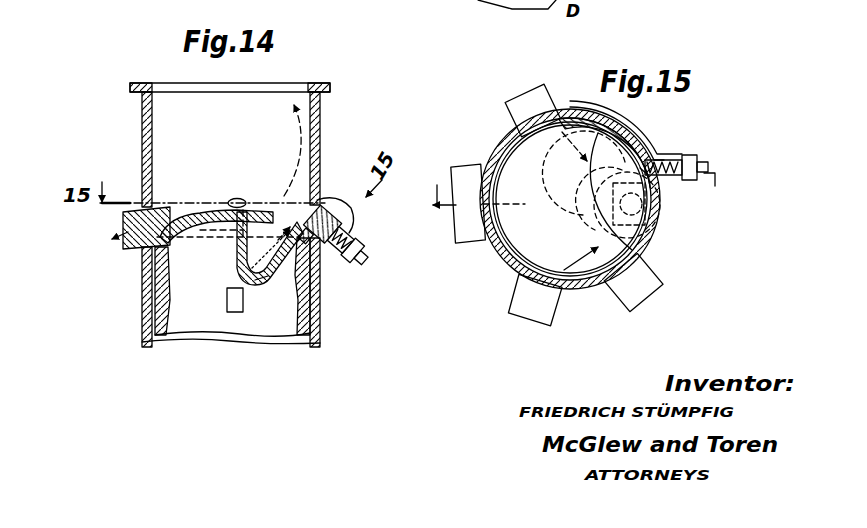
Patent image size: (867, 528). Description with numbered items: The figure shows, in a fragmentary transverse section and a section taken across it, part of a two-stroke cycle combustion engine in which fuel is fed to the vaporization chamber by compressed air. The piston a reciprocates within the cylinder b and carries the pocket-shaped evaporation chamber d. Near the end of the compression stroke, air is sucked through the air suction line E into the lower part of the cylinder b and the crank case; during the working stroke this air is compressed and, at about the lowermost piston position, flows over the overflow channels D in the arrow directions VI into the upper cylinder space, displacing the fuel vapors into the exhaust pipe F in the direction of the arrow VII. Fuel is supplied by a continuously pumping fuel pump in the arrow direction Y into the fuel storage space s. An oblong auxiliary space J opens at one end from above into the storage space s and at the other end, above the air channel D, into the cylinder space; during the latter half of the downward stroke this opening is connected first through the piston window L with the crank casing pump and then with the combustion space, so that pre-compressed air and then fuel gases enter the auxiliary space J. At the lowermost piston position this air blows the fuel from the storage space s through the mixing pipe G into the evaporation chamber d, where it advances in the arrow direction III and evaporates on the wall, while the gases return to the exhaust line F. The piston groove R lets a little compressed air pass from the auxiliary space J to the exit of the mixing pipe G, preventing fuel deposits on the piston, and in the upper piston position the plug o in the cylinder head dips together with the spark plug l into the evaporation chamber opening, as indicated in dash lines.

In FIG. 14, the piston a is at (153, 278).
In FIG. 15, the piston a is at (511, 144).
In FIG. 14, the cylinder b is at (142, 157).
In FIG. 15, the cylinder b is at (489, 173).
In FIG. 14, the overflow channels D is at (212, 237).
In FIG. 15, the overflow channels D is at (547, 101).
In FIG. 14, the evaporation chamber d is at (245, 273).
In FIG. 15, the evaporation chamber d is at (586, 188).
In FIG. 15, the air suction line E is at (652, 281).
In FIG. 14, the exhaust pipe F is at (122, 223).
In FIG. 15, the exhaust pipe F is at (471, 241).
In FIG. 15, the mixing pipe G is at (652, 178).
In FIG. 14, the auxiliary space J is at (279, 206).
In FIG. 15, the auxiliary space J is at (653, 136).
In FIG. 15, the spark plug l is at (656, 212).
In FIG. 14, the piston window L is at (228, 303).
In FIG. 15, the plug o is at (657, 228).
In FIG. 14, the piston groove R is at (293, 273).
In FIG. 15, the piston groove R is at (624, 168).
In FIG. 15, the fuel storage space s is at (680, 162).
In FIG. 15, the fuel supply arrow direction Y is at (701, 184).
In FIG. 14, the fuel advance arrow direction III is at (263, 257).
In FIG. 15, the fuel advance arrow direction III is at (596, 216).
In FIG. 14, the scavenging air arrow directions VI is at (297, 137).
In FIG. 15, the scavenging air arrow directions VI is at (574, 151).
In FIG. 14, the exhaust arrow direction VII is at (174, 186).
In FIG. 15, the exhaust arrow direction VII is at (443, 185).